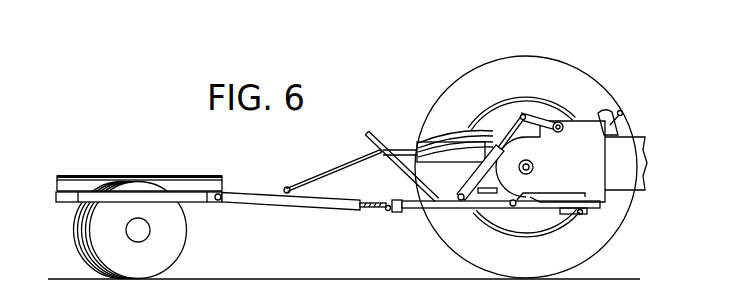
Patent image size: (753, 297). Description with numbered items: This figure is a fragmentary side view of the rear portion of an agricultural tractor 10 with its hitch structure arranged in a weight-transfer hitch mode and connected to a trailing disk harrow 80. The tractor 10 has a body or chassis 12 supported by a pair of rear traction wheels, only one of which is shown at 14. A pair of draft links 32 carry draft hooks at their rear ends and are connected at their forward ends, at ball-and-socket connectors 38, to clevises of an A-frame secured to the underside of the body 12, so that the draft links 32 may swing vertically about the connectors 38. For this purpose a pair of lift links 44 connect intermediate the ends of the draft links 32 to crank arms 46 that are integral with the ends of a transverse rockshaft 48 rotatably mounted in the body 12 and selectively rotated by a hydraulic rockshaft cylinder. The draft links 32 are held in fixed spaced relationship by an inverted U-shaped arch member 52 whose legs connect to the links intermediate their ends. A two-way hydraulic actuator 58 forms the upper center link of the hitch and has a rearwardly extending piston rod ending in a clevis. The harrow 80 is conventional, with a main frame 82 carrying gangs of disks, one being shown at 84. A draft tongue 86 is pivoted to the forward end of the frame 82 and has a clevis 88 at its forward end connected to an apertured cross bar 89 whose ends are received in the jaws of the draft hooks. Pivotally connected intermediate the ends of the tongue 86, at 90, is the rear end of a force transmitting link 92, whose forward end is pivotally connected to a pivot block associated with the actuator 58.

The agricultural tractor 10 is at (607, 79).
The body or chassis 12 is at (645, 162).
The rear traction wheel 14 is at (525, 57).
The draft link 32 is at (421, 209).
The ball-and-socket connector 38 is at (517, 200).
The lift link 44 is at (508, 136).
The crank arm 46 is at (538, 109).
The transverse rockshaft 48 is at (559, 133).
The inverted U-shaped arch member 52 is at (390, 166).
The two-way hydraulic actuator 58 is at (417, 142).
The trailing disk harrow 80 is at (245, 168).
The main frame 82 is at (197, 202).
The gang of disks 84 is at (181, 257).
The draft tongue 86 is at (293, 207).
The clevis 88 is at (374, 210).
The apertured cross bar 89 is at (389, 205).
The pivot 90 is at (288, 187).
The force transmitting link 92 is at (328, 171).